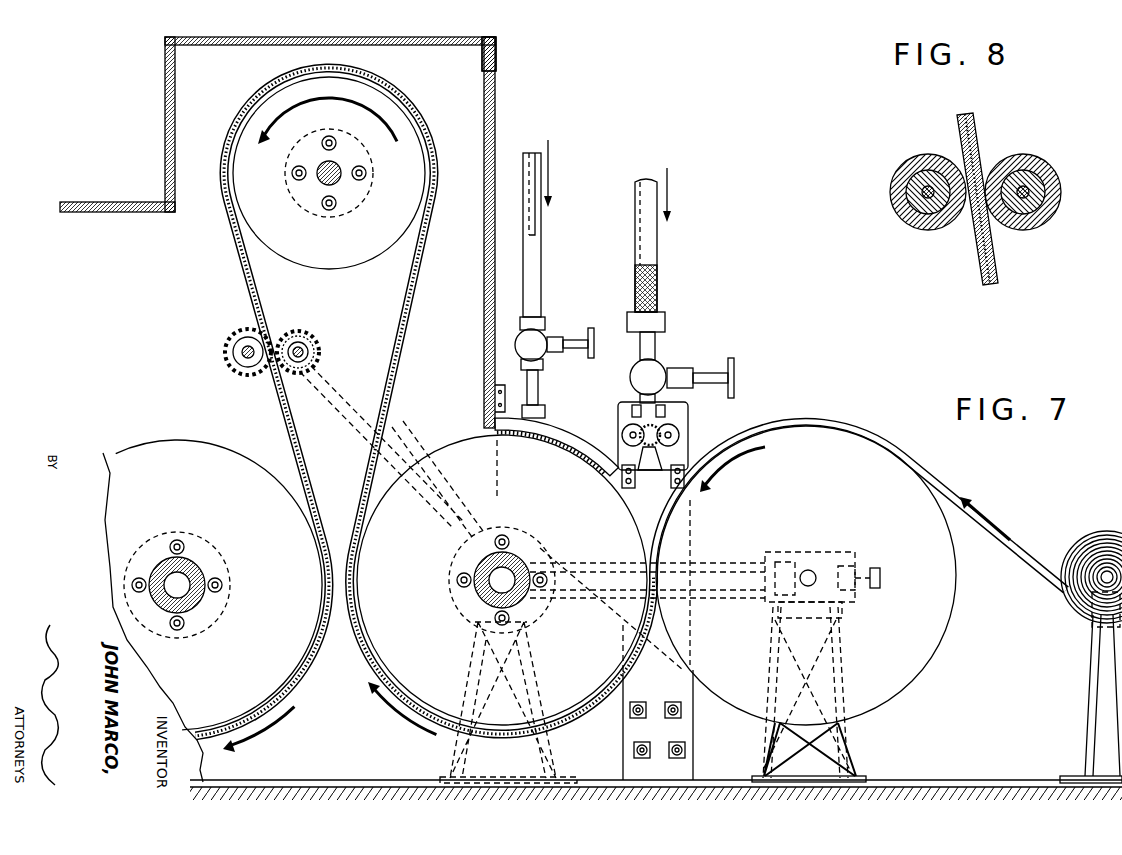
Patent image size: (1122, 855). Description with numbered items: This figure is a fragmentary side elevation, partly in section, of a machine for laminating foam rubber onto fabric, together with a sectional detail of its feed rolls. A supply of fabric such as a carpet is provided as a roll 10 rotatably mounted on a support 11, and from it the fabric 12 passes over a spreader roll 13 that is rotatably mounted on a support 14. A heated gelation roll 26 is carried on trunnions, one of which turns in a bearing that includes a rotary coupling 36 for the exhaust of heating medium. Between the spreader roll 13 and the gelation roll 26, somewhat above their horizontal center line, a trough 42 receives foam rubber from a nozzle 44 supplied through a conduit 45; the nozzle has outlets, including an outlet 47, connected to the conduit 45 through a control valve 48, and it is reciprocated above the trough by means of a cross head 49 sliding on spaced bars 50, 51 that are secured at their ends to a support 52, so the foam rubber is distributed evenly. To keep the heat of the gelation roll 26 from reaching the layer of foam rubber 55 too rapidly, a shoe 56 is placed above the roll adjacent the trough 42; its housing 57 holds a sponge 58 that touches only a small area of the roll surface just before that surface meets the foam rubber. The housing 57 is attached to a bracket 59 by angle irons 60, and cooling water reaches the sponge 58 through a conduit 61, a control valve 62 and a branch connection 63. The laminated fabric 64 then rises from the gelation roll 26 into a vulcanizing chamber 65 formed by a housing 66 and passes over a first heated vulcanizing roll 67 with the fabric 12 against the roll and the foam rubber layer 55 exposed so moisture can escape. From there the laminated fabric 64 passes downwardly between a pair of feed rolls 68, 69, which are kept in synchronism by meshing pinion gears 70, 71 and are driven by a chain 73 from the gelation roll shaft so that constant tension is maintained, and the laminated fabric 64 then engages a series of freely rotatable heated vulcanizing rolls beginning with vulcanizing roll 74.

In FIG. 7, the roll 10 is at (1068, 625).
In FIG. 7, the support 11 is at (1088, 712).
In FIG. 7, the fabric 12 is at (402, 318).
In FIG. 8, the fabric 12 is at (1000, 262).
In FIG. 7, the spreader roll 13 is at (924, 670).
In FIG. 7, the support 14 is at (858, 748).
In FIG. 7, the gelation roll 26 is at (412, 568).
In FIG. 7, the rotary coupling 36 is at (548, 742).
In FIG. 7, the trough 42 is at (675, 512).
In FIG. 7, the nozzle 44 is at (664, 452).
In FIG. 7, the conduit 45 is at (660, 275).
In FIG. 7, the outlet 47 is at (650, 472).
In FIG. 7, the control valve 48 is at (668, 372).
In FIG. 7, the cross head 49 is at (690, 414).
In FIG. 7, the bar 50 is at (628, 440).
In FIG. 7, the bar 51 is at (680, 432).
In FIG. 7, the support 52 is at (735, 370).
In FIG. 7, the layer of foam rubber 55 is at (418, 232).
In FIG. 8, the layer of foam rubber 55 is at (978, 245).
In FIG. 7, the shoe 56 is at (557, 424).
In FIG. 7, the housing 57 is at (580, 468).
In FIG. 7, the sponge 58 is at (545, 445).
In FIG. 7, the bracket 59 is at (488, 275).
In FIG. 7, the angle irons 60 is at (497, 395).
In FIG. 7, the conduit 61 is at (533, 262).
In FIG. 7, the control valve 62 is at (542, 337).
In FIG. 7, the branch connection 63 is at (540, 396).
In FIG. 7, the laminated fabric 64 is at (404, 361).
In FIG. 8, the laminated fabric 64 is at (962, 132).
In FIG. 7, the vulcanizing chamber 65 is at (488, 134).
In FIG. 7, the housing 66 is at (498, 87).
In FIG. 7, the first heated vulcanizing roll 67 is at (400, 140).
In FIG. 7, the feed roll 68 is at (225, 358).
In FIG. 8, the feed roll 68 is at (890, 197).
In FIG. 7, the feed roll 69 is at (318, 354).
In FIG. 8, the feed roll 69 is at (1061, 193).
In FIG. 7, the pinion gear 70 is at (236, 336).
In FIG. 7, the pinion gear 71 is at (304, 330).
In FIG. 7, the chain 73 is at (428, 446).
In FIG. 7, the heated vulcanizing roll 74 is at (178, 446).